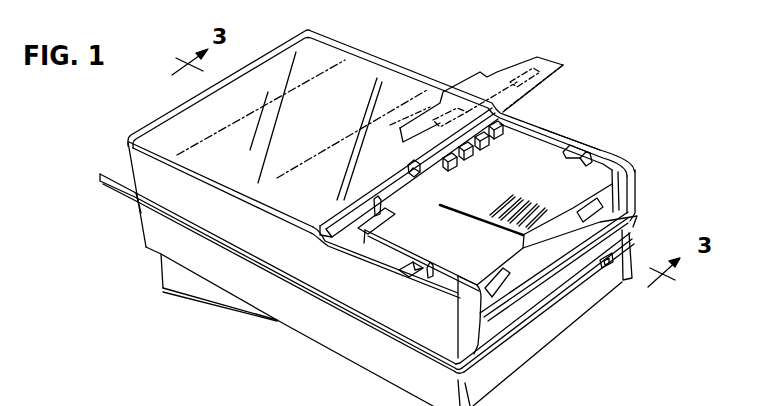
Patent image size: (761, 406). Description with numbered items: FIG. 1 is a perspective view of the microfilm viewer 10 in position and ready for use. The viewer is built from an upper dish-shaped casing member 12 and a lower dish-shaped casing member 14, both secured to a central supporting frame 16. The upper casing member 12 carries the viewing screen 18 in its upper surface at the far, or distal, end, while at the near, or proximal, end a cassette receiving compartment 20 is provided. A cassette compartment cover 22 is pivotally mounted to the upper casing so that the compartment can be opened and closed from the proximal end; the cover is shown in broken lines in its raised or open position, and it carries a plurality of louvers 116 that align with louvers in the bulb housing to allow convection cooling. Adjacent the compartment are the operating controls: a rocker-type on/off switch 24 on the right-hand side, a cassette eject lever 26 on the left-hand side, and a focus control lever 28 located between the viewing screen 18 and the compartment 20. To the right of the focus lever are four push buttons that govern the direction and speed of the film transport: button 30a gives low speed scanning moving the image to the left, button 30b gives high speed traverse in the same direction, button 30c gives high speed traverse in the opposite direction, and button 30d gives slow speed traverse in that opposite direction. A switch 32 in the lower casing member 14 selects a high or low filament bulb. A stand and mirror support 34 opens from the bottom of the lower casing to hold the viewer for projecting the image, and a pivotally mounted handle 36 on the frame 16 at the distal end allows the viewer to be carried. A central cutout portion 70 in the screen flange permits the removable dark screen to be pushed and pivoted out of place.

The viewer 10 is at (156, 268).
The upper dish-shaped casing member 12 is at (221, 225).
The lower dish-shaped casing member 14 is at (208, 270).
The central supporting frame 16 is at (141, 213).
The viewing screen 18 is at (300, 159).
The cassette receiving compartment 20 is at (547, 159).
The cassette compartment cover 22 is at (470, 263).
The rocker-type on/off switch 24 is at (592, 151).
The cassette eject lever 26 is at (411, 278).
The focus control lever 28 is at (350, 213).
The push button 30a is at (448, 173).
The push button 30b is at (467, 148).
The push button 30c is at (487, 141).
The push button 30d is at (506, 118).
The switch 32 is at (606, 270).
The stand and mirror support 34 is at (191, 288).
The pivotally mounted handle 36 is at (106, 186).
The central cutout portion 70 is at (407, 167).
The louvers 116 is at (545, 188).